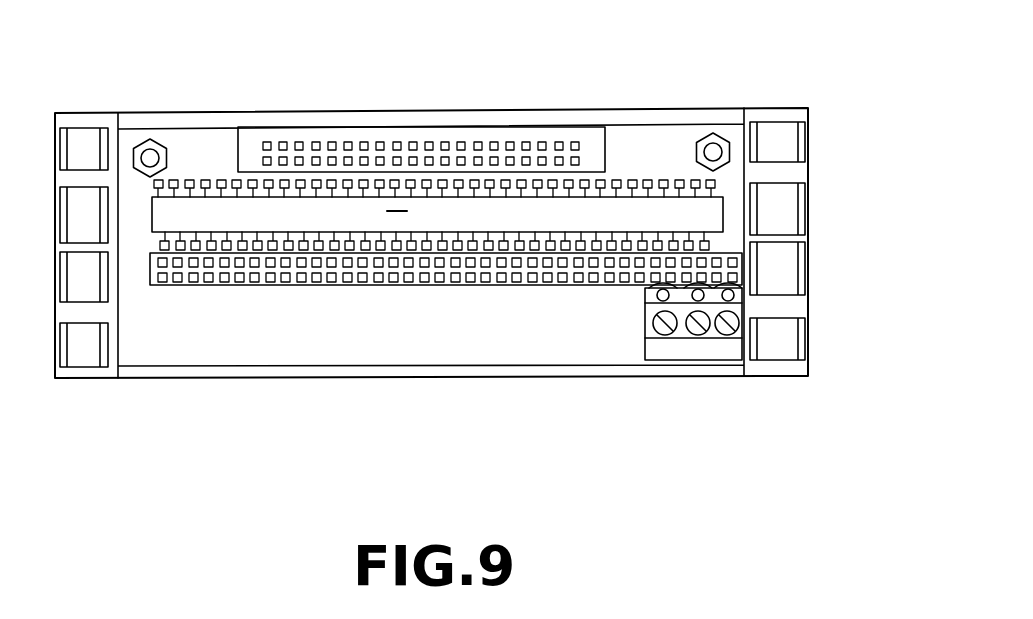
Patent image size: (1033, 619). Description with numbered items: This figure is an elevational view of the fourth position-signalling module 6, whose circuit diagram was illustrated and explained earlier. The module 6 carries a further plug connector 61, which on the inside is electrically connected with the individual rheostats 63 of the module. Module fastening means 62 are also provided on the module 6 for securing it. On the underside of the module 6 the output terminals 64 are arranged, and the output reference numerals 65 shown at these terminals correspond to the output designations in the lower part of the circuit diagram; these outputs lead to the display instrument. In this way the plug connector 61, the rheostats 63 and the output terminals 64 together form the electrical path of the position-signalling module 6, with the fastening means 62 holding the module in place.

The position-signalling module 6 is at (193, 143).
The plug connector 61 is at (598, 132).
The module fastening means 62 is at (713, 138).
The rheostats 63 is at (707, 208).
The output terminals 64 is at (705, 333).
The output reference numerals 65 is at (728, 348).